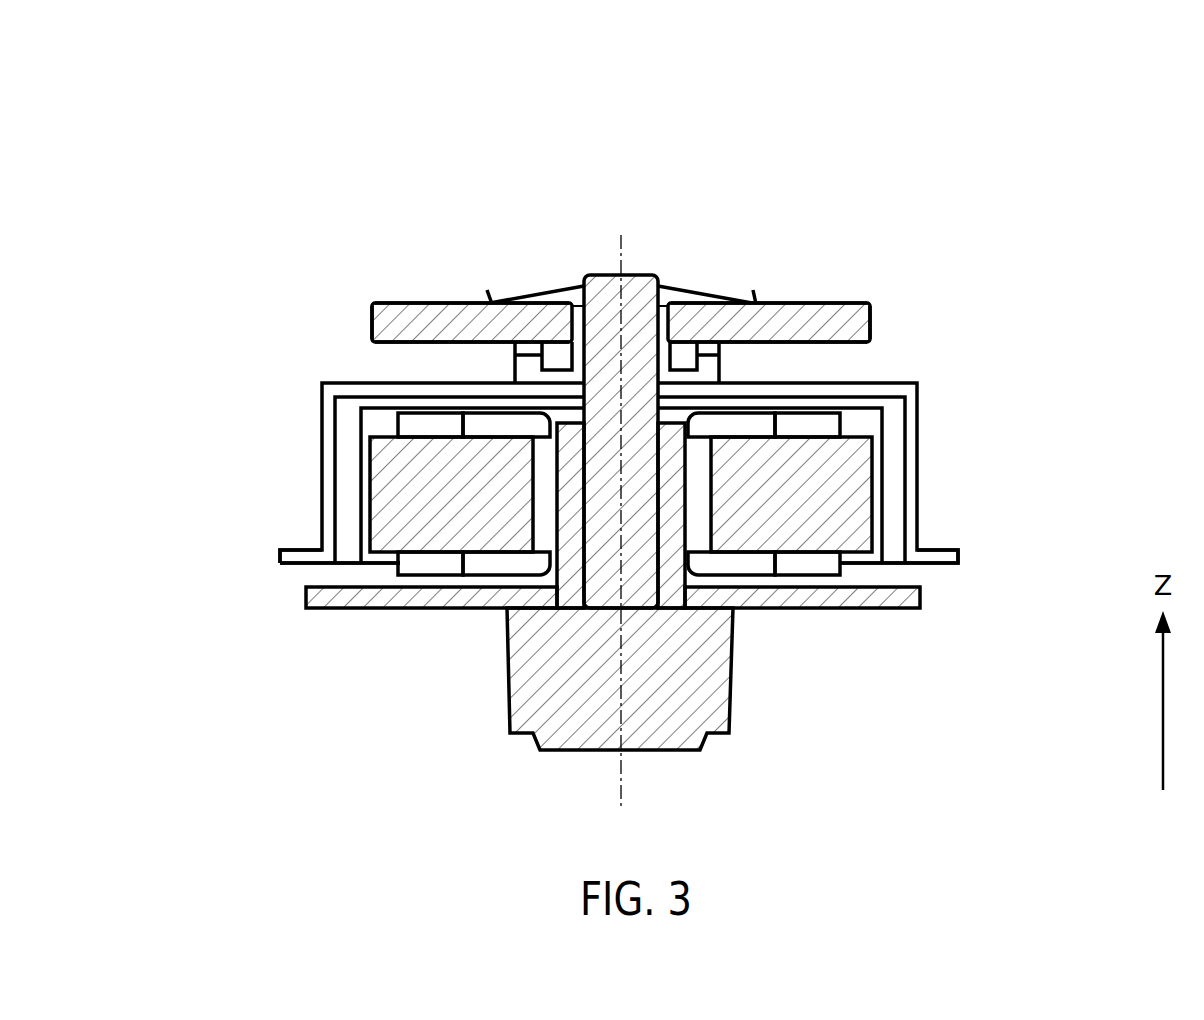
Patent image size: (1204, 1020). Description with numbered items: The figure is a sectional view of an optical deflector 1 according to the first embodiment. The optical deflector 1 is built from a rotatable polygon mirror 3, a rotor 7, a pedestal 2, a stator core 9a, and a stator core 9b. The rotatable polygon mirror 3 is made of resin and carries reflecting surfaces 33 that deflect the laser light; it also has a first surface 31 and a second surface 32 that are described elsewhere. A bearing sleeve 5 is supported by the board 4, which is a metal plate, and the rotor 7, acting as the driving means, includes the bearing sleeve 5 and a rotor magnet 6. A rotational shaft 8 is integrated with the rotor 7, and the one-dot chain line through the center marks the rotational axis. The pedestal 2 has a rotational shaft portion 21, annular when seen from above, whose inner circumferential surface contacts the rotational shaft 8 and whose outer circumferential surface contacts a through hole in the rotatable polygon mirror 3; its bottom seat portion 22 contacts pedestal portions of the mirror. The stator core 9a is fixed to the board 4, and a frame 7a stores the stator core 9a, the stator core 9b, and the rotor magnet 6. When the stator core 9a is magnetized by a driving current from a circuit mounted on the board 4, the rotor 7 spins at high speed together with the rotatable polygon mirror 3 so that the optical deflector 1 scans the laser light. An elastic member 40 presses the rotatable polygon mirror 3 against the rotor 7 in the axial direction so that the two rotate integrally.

The optical deflector 1 is at (672, 108).
The pedestal 2 is at (720, 375).
The rotatable polygon mirror 3 is at (392, 272).
The board 4 is at (335, 600).
The bearing sleeve 5 is at (705, 690).
The rotor magnet 6 is at (350, 482).
The rotor 7 is at (918, 441).
The frame 7a is at (298, 538).
The rotational shaft 8 is at (612, 288).
The stator core 9a is at (835, 516).
The stator core 9b is at (815, 428).
The rotational shaft portion 21 is at (664, 305).
The bottom seat portion 22 is at (716, 353).
The first surface 31 is at (428, 303).
The second surface 32 is at (428, 344).
The reflecting surfaces 33 is at (370, 316).
The elastic member 40 is at (698, 292).